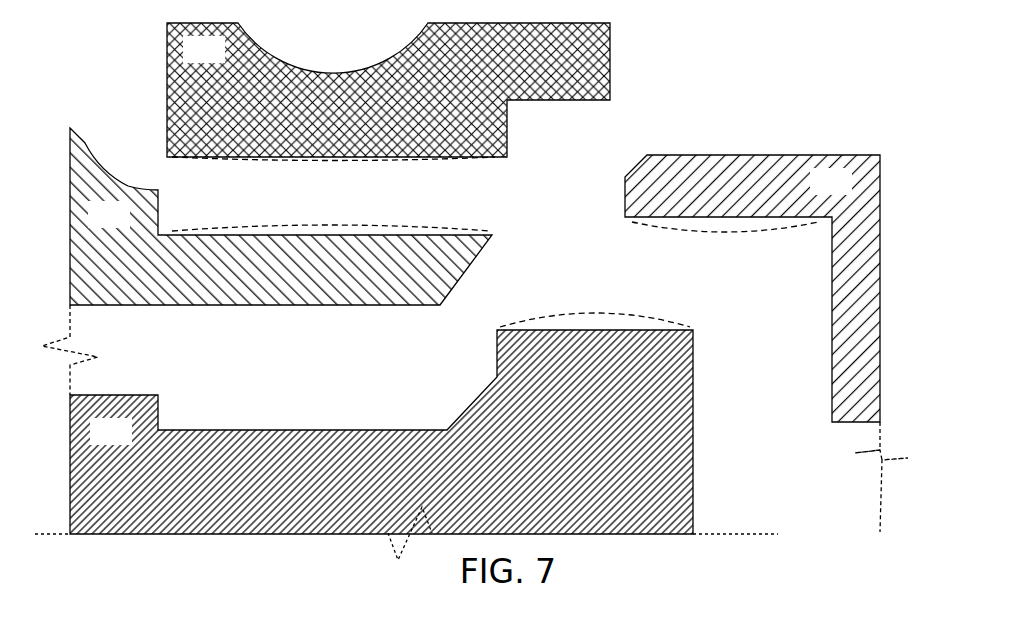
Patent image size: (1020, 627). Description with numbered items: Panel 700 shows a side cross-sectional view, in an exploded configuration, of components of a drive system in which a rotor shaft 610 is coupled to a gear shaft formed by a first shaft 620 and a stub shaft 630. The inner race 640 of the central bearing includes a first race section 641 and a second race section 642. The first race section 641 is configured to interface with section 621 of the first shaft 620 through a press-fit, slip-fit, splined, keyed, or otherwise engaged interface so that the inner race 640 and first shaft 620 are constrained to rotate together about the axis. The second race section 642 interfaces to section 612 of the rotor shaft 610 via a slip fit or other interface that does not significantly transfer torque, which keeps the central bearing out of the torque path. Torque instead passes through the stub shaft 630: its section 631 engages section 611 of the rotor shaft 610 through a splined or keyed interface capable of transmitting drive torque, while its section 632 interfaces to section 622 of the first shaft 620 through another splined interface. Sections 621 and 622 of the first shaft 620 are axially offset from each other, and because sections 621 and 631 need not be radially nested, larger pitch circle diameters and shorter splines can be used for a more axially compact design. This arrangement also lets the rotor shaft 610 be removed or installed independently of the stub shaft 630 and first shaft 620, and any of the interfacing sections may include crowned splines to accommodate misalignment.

The panel 700 is at (810, 88).
The rotor shaft 610 is at (812, 192).
The section of rotor shaft 611 is at (820, 236).
The section of rotor shaft 612 is at (648, 146).
The first shaft 620 is at (90, 225).
The section of first shaft 621 is at (173, 216).
The section of first shaft 622 is at (72, 312).
The stub shaft 630 is at (92, 441).
The section of stub shaft 631 is at (692, 306).
The section of stub shaft 632 is at (72, 394).
The inner race 640 is at (185, 61).
The first race section 641 is at (510, 167).
The second race section 642 is at (528, 113).